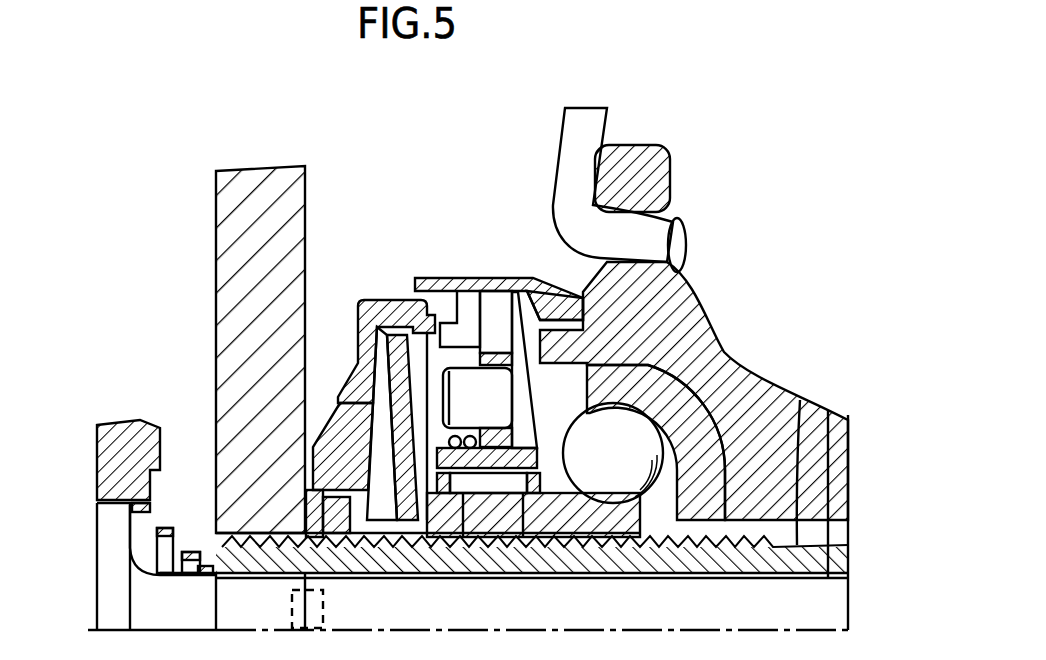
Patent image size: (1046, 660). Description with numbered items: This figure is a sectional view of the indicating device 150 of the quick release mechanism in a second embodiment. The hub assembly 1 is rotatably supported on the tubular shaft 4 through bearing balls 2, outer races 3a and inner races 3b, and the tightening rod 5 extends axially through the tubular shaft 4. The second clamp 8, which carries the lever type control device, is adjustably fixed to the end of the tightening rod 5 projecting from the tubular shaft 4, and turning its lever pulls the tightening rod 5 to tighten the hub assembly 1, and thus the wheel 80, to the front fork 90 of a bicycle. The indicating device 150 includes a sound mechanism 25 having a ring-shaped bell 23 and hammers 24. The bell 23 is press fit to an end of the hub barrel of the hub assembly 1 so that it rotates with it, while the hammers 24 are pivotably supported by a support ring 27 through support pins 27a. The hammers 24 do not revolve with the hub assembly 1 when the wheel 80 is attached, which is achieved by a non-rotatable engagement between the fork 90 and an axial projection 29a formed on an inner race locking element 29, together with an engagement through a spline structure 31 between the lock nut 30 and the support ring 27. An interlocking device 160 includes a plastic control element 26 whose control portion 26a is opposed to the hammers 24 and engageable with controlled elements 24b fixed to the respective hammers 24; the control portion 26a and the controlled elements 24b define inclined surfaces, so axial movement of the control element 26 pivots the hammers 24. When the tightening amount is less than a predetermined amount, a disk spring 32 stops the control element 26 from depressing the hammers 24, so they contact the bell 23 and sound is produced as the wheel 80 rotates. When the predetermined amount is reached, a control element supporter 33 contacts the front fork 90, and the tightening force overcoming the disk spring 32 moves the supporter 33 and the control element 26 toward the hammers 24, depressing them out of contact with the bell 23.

The hub assembly 1 is at (684, 279).
The bearing balls 2 is at (697, 420).
The outer races 3a is at (720, 447).
The inner races 3b is at (645, 522).
The tubular shaft 4 is at (800, 400).
The tightening rod 5 is at (822, 590).
The second clamp 8 is at (113, 420).
The bell 23 is at (534, 278).
The hammers 24 is at (493, 320).
The controlled elements 24b is at (452, 277).
The sound mechanism 25 is at (519, 322).
The control element 26 is at (368, 297).
The control portion 26a is at (437, 320).
The support ring 27 is at (527, 478).
The support pins 27a is at (487, 400).
The inner race locking element 29 is at (323, 518).
The axial projection 29a is at (292, 608).
The lock nut 30 is at (470, 482).
The spline structure 31 is at (492, 480).
The disk spring 32 is at (400, 484).
The control element supporter 33 is at (333, 443).
The wheel 80 is at (552, 122).
The fork 90 is at (222, 205).
The indicating device 150 is at (513, 212).
The interlocking device 160 is at (333, 300).